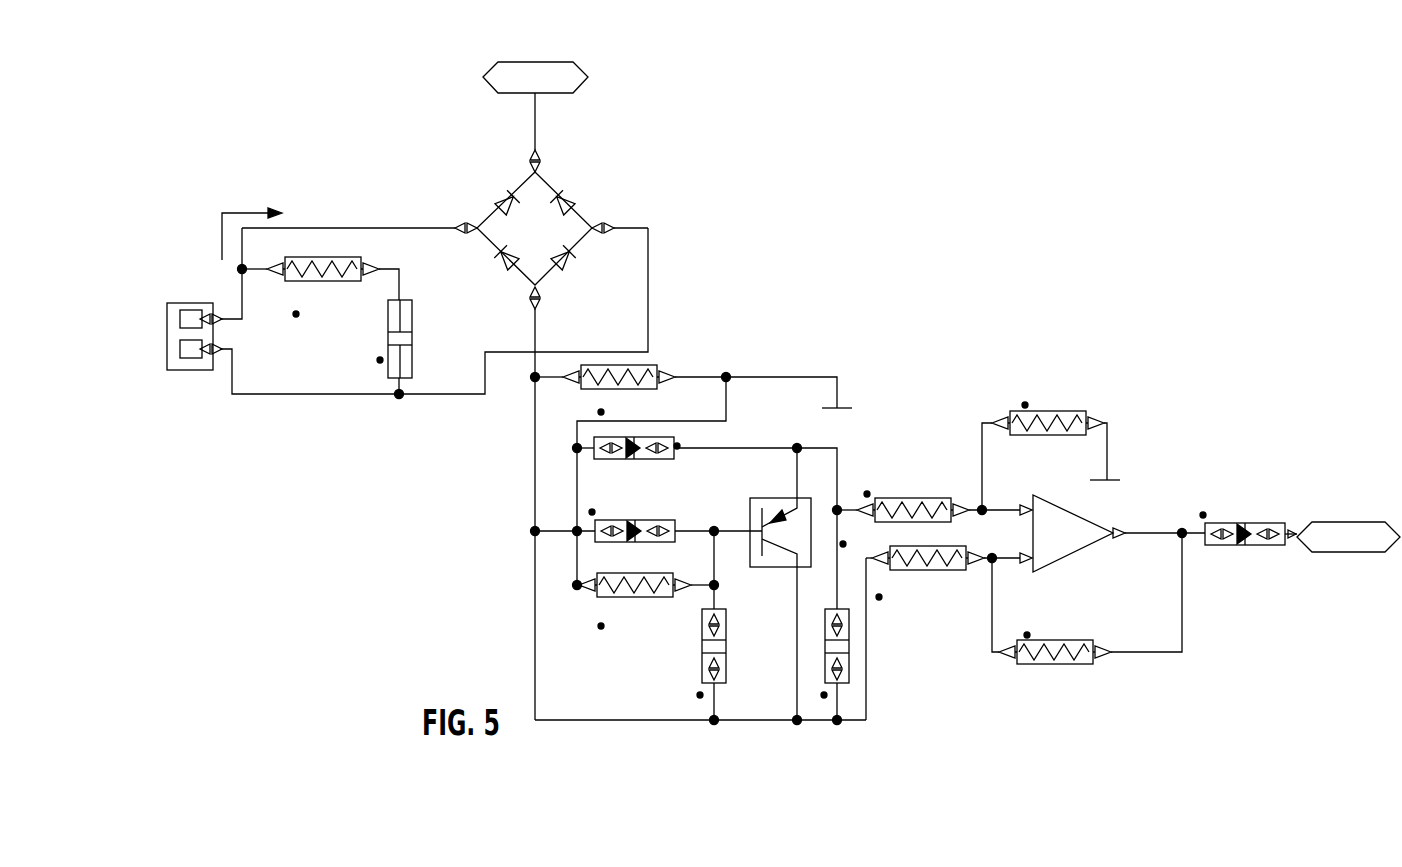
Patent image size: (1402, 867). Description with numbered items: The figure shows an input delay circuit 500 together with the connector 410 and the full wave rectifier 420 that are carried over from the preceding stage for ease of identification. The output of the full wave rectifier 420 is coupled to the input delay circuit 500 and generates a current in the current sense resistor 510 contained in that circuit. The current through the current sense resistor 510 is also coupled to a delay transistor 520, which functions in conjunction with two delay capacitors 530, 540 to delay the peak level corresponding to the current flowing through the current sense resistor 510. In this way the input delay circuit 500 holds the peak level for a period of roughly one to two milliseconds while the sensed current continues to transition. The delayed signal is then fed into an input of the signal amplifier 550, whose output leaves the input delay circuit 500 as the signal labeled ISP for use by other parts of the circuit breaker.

The input delay circuit 500 is at (978, 250).
The connector 410 is at (186, 303).
The full wave rectifier 420 is at (580, 217).
The current sense resistor 510 is at (636, 379).
The delay transistor 520 is at (756, 499).
The delay capacitor 530 is at (703, 643).
The delay capacitor 540 is at (849, 660).
The signal amplifier 550 is at (1067, 508).